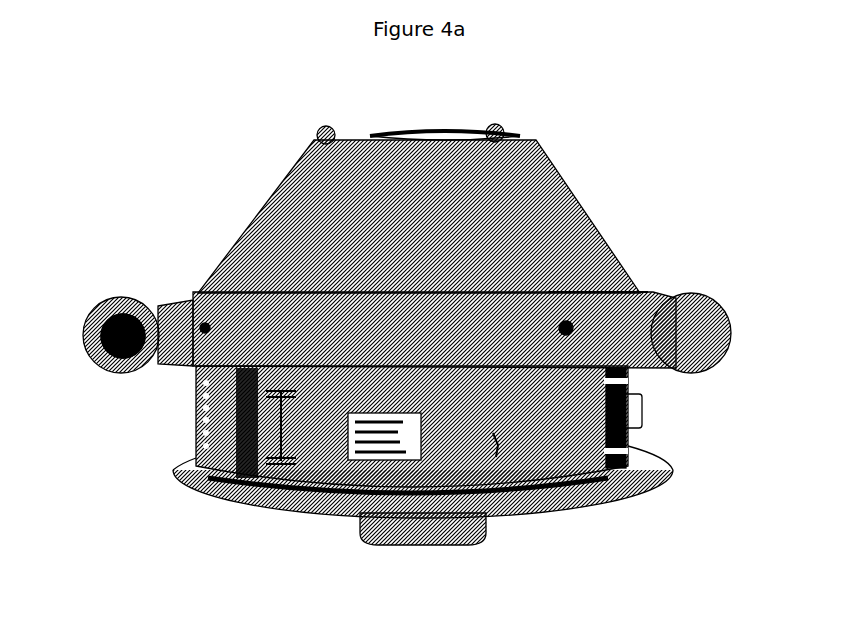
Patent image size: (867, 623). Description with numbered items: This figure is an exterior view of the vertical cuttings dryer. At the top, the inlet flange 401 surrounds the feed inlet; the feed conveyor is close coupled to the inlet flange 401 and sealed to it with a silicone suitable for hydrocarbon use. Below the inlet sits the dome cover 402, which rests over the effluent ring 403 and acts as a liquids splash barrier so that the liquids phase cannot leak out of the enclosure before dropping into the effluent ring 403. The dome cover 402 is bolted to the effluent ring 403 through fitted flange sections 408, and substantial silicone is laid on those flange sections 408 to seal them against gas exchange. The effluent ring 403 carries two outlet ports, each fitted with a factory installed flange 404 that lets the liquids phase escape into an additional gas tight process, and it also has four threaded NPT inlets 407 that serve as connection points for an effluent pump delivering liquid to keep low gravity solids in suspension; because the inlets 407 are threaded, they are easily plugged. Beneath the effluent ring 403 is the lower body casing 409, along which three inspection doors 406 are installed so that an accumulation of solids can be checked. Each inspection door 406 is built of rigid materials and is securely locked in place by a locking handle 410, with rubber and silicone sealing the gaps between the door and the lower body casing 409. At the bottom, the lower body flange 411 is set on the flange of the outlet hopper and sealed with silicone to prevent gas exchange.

The inlet flange 401 is at (420, 126).
The dome cover 402 is at (570, 195).
The effluent ring 403 is at (263, 320).
The outlet port flange 404 is at (98, 295).
The inspection door 406 is at (620, 430).
The NPT inlet 407 is at (195, 318).
The flange section 408 is at (562, 280).
The lower body casing 409 is at (530, 450).
The locking handle 410 is at (485, 435).
The lower body flange 411 is at (663, 461).